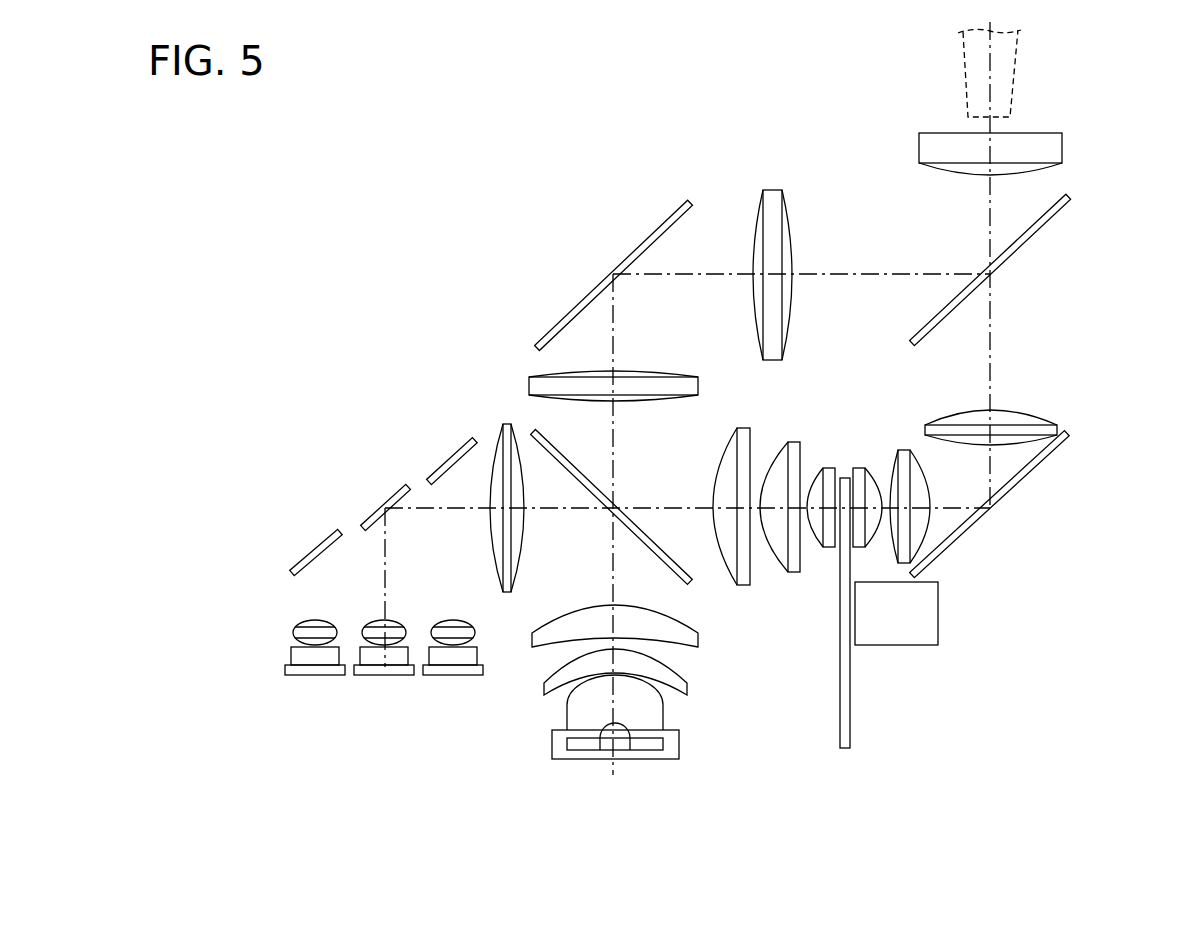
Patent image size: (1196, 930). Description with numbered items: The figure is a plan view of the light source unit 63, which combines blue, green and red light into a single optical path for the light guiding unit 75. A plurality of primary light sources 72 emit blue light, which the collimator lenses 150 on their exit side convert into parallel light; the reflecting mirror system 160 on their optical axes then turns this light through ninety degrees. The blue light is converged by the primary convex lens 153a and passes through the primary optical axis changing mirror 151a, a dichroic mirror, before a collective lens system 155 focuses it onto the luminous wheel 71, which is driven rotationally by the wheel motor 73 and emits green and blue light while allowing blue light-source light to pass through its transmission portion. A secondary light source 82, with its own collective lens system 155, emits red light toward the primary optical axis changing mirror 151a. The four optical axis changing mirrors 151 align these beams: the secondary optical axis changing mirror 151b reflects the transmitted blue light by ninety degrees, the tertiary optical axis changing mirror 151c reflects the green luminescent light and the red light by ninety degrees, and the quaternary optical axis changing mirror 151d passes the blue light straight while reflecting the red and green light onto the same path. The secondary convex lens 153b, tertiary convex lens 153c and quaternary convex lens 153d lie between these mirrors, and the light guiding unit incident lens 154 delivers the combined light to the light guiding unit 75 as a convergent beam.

The light source unit 63 is at (374, 193).
The light guiding unit 75 is at (1003, 72).
The light guiding unit incident lens 154 is at (1048, 148).
The optical axis changing mirrors 151 is at (794, 342).
The primary optical axis changing mirror 151a is at (533, 432).
The secondary optical axis changing mirror 151b is at (1040, 458).
The tertiary optical axis changing mirror 151c is at (675, 203).
The quaternary optical axis changing mirror 151d is at (1050, 214).
The primary convex lens 153a is at (505, 440).
The secondary convex lens 153b is at (1043, 430).
The tertiary convex lens 153c is at (675, 385).
The quaternary convex lens 153d is at (775, 230).
The reflecting mirror system 160 is at (345, 490).
The collective lens system 155 is at (883, 450).
The luminous wheel 71 is at (852, 730).
The wheel motor 73 is at (913, 620).
The secondary light source 82 is at (607, 745).
The primary light sources 72 is at (337, 693).
The collimator lenses 150 is at (303, 632).